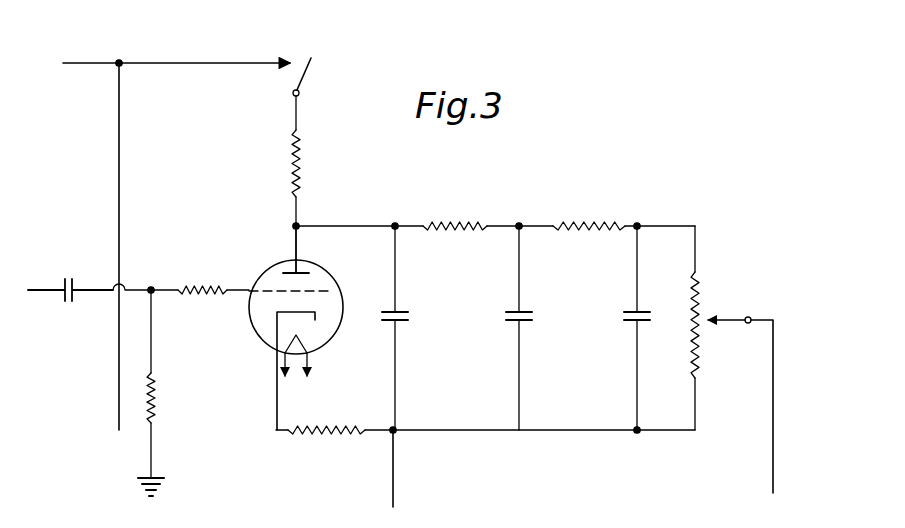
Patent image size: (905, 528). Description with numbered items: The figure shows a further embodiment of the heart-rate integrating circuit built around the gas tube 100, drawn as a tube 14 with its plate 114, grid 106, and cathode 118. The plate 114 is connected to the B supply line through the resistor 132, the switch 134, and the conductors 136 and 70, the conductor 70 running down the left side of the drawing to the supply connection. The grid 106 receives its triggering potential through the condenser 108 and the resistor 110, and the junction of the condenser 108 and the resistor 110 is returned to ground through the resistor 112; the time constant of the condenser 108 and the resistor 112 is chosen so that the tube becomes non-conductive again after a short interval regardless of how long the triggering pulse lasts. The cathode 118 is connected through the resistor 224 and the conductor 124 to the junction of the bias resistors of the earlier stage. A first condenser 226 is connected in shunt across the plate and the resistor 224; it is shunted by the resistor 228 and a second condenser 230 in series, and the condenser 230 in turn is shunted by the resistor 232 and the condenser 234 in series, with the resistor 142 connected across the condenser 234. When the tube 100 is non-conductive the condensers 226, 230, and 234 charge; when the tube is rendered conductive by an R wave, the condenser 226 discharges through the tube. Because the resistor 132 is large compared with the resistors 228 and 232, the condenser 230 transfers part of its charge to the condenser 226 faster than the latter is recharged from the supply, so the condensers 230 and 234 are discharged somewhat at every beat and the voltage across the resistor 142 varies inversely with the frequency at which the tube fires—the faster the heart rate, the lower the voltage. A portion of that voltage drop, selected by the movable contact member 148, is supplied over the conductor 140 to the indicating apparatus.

The electron discharge tube 14 is at (289, 327).
The conductor 70 is at (118, 185).
The gas tube 100 is at (322, 352).
The grid 106 is at (320, 293).
The condenser 108 is at (70, 303).
The resistor 110 is at (206, 287).
The resistor 112 is at (156, 403).
The plate 114 is at (302, 271).
The cathode 118 is at (283, 318).
The conductor 124 is at (392, 490).
The resistor 132 is at (298, 153).
The switch 134 is at (301, 80).
The conductor 136 is at (184, 63).
The conductor 140 is at (770, 486).
The resistor 142 is at (700, 282).
The movable contact member 148 is at (740, 304).
The resistor 224 is at (304, 434).
The first condenser 226 is at (400, 311).
The resistor 228 is at (434, 224).
The second condenser 230 is at (525, 311).
The resistor 232 is at (565, 224).
The condenser 234 is at (642, 311).